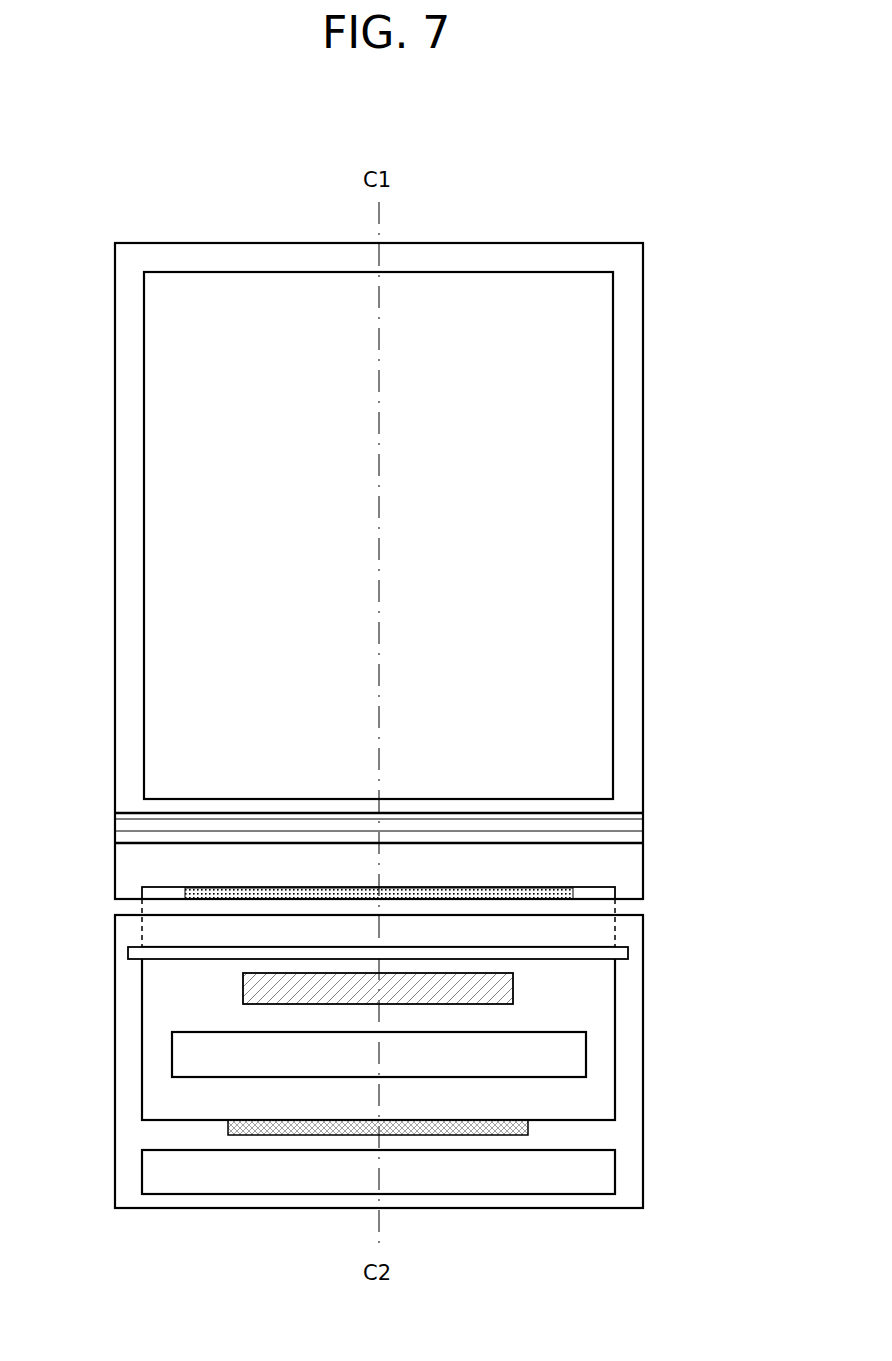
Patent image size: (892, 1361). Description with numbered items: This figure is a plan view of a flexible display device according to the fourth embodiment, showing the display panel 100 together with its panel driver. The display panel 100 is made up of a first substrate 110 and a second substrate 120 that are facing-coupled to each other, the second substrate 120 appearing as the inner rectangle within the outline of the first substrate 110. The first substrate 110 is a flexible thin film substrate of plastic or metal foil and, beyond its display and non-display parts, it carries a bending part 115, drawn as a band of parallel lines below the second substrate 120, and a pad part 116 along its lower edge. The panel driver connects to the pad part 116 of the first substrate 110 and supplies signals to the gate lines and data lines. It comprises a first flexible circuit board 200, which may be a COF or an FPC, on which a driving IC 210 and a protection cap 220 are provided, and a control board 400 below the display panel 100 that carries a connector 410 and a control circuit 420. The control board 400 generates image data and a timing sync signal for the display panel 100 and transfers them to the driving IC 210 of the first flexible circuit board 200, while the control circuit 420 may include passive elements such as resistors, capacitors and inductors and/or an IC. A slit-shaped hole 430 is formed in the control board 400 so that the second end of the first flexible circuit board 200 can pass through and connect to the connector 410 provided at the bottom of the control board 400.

The display panel 100 is at (448, 571).
The first substrate 110 is at (630, 477).
The second substrate 120 is at (613, 530).
The bending part 115 is at (643, 823).
The pad part 116 is at (558, 886).
The first flexible circuit board 200 is at (615, 1025).
The driving IC 210 is at (514, 993).
The protection cap 220 is at (586, 1051).
The control board 400 is at (643, 1092).
The connector 410 is at (457, 1128).
The control circuit 420 is at (560, 1172).
The hole 430 is at (630, 950).